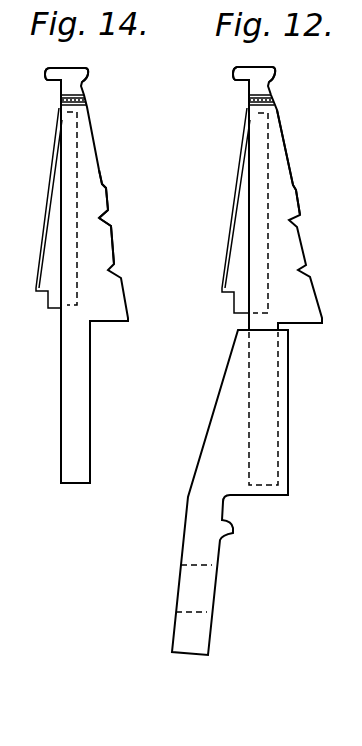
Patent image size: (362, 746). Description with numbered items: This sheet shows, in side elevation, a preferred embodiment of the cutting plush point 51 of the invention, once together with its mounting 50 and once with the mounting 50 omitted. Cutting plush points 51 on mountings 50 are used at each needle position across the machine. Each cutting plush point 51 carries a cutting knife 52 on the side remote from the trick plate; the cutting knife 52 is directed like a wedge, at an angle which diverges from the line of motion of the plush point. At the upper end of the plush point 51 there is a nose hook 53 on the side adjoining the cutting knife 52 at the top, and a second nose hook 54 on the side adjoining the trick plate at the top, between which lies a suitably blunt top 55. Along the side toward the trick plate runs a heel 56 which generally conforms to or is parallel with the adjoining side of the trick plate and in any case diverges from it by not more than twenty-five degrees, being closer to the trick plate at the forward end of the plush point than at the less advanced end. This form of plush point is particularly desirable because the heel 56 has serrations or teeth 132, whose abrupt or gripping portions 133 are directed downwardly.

In FIG. 12, the mounting 50 is at (220, 428).
In FIG. 14, the cutting plush point 51 is at (65, 128).
In FIG. 12, the cutting plush point 51 is at (262, 143).
In FIG. 14, the cutting knife 52 is at (47, 248).
In FIG. 12, the cutting knife 52 is at (228, 268).
In FIG. 14, the nose hook 53 is at (50, 70).
In FIG. 12, the nose hook 53 is at (237, 72).
In FIG. 14, the nose hook 54 is at (84, 81).
In FIG. 12, the nose hook 54 is at (270, 82).
In FIG. 14, the blunt top 55 is at (82, 68).
In FIG. 14, the heel 56 is at (106, 191).
In FIG. 12, the heel 56 is at (298, 192).
In FIG. 14, the serrations or teeth 132 is at (108, 228).
In FIG. 14, the gripping portions 133 is at (108, 212).